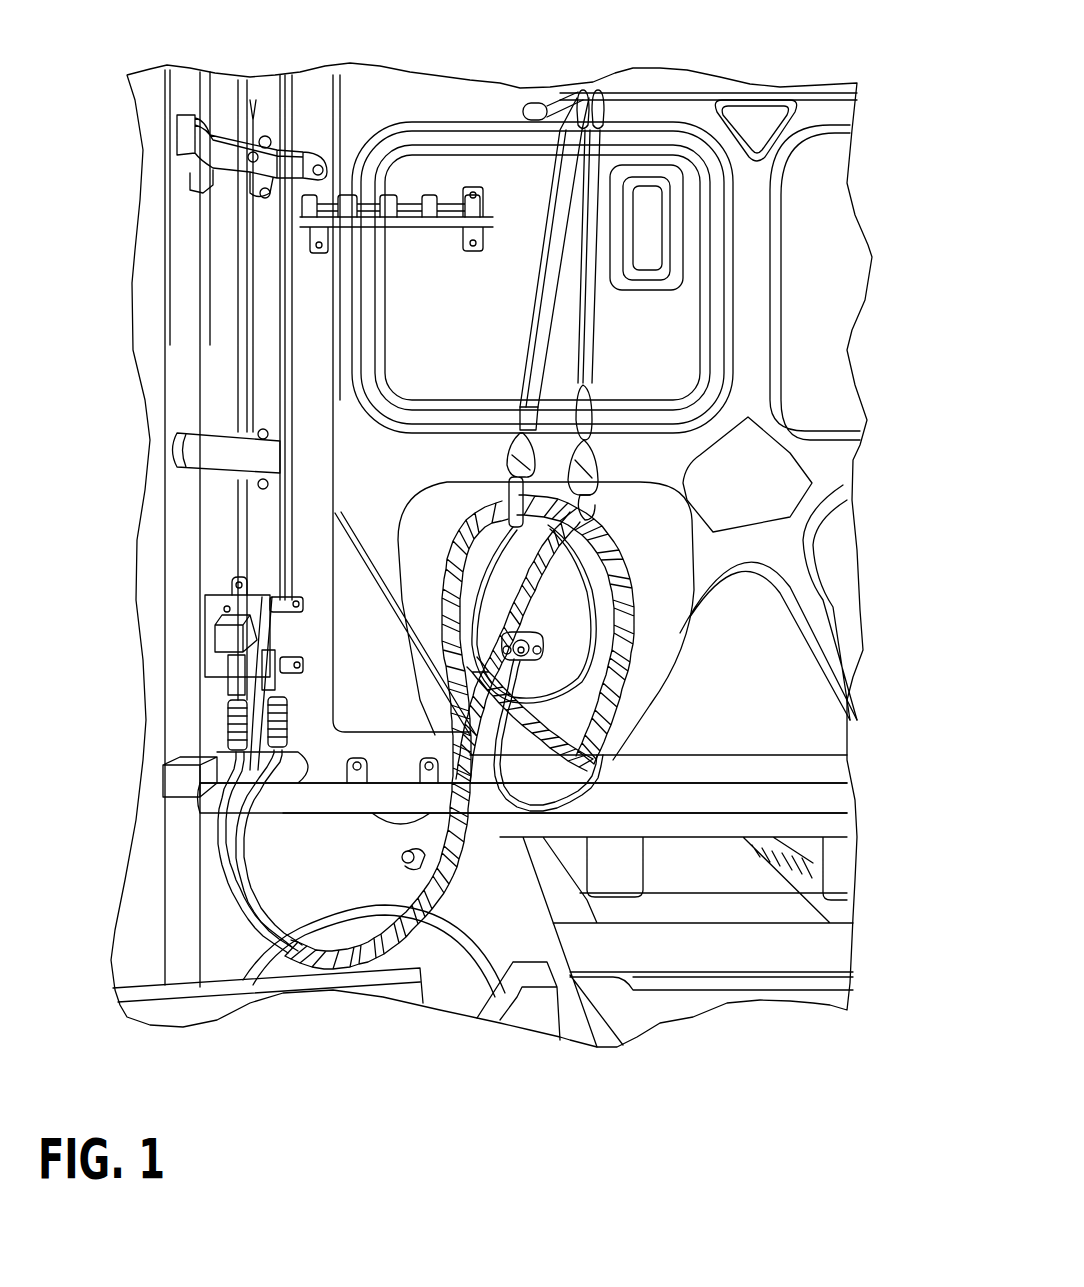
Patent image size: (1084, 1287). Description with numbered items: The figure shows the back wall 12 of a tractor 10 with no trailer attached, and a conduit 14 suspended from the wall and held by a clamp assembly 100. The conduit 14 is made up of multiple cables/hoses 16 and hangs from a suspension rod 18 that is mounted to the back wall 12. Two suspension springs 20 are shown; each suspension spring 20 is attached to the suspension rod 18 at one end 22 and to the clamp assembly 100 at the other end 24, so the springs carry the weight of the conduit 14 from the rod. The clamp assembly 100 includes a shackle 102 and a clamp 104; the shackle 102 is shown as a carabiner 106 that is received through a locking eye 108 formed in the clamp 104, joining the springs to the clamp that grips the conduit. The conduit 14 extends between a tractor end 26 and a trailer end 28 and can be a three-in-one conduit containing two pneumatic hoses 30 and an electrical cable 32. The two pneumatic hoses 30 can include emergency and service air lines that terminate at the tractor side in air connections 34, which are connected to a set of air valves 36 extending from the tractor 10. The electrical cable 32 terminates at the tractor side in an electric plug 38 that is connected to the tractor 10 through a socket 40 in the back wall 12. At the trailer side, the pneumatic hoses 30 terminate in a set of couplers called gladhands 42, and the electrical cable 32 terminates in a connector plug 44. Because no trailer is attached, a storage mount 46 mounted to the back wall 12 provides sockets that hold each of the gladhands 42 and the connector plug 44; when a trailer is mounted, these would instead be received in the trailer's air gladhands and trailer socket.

The tractor 10 is at (855, 183).
The back wall 12 is at (480, 323).
The conduit 14 is at (617, 703).
The cables/hoses 16 is at (620, 553).
The suspension rod 18 is at (693, 93).
The suspension spring 20 is at (553, 190).
The one end 22 is at (597, 90).
The other end 24 is at (590, 392).
The tractor end 26 is at (189, 617).
The trailer end 28 is at (600, 770).
The pneumatic hoses 30 is at (485, 818).
The electrical cable 32 is at (172, 762).
The air connections 34 is at (400, 860).
The air valves 36 is at (405, 852).
The electric plug 38 is at (543, 648).
The socket 40 is at (520, 633).
The gladhands 42 is at (232, 708).
The connector plug 44 is at (236, 594).
The storage mount 46 is at (264, 582).
The clamp assembly 100 is at (598, 727).
The shackle 102 is at (585, 455).
The clamp 104 is at (600, 480).
The carabiner 106 is at (500, 452).
The locking eye 108 is at (590, 468).